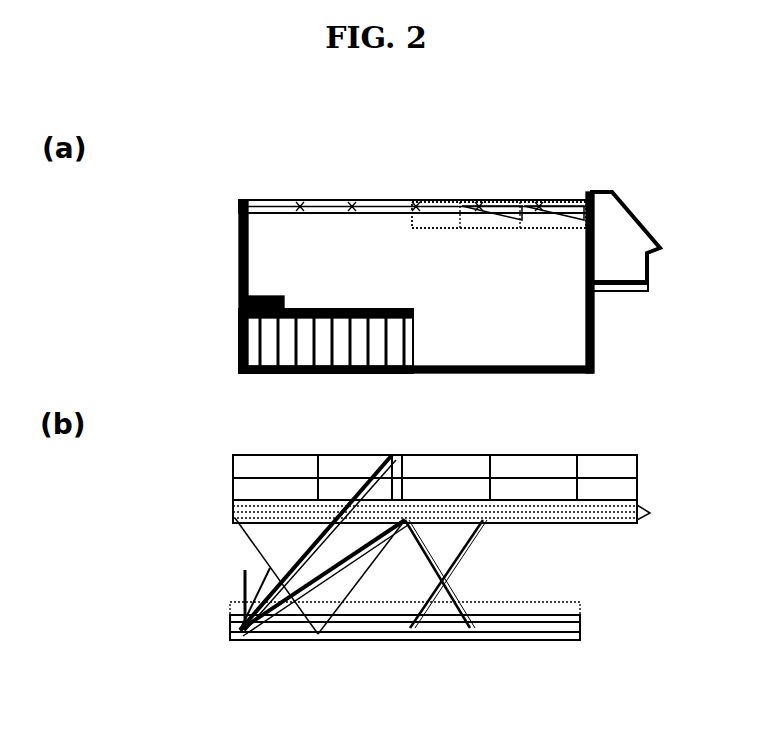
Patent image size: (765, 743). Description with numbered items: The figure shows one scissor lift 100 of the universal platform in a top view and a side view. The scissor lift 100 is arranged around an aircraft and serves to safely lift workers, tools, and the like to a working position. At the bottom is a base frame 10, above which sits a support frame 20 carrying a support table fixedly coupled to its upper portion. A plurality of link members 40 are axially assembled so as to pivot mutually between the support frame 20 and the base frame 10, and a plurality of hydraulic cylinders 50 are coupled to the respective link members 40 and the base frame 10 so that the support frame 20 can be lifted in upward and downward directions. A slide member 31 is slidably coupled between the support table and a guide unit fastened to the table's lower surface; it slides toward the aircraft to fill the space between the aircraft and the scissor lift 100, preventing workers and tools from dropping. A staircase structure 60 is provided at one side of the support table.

The scissor lift 100 is at (240, 237).
The base frame 10 is at (562, 627).
The support frame 20 is at (553, 522).
The slide member 31 is at (430, 218).
The link member 40 is at (250, 545).
The hydraulic cylinder 50 is at (438, 560).
The staircase structure 60 is at (256, 345).